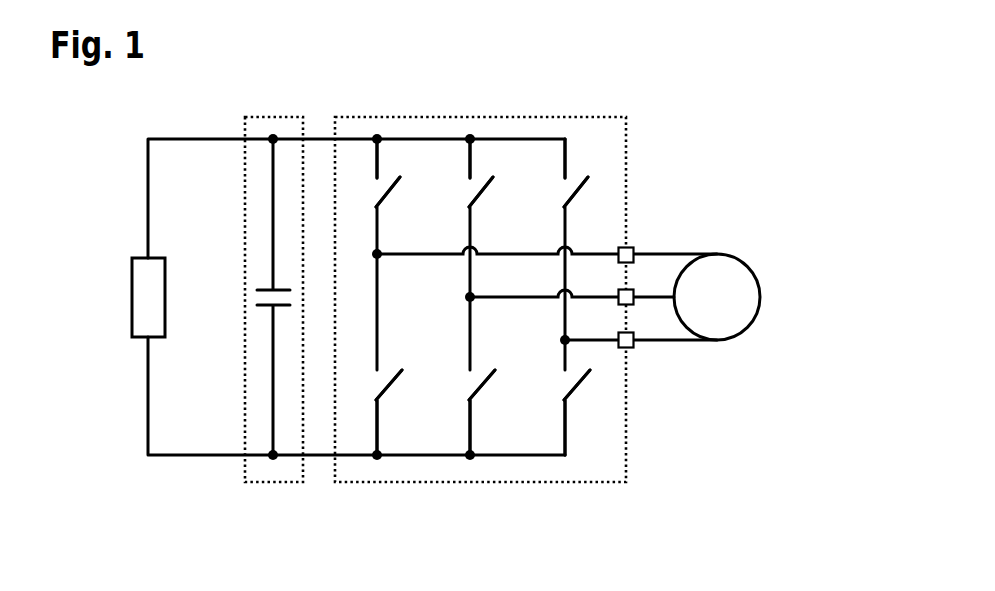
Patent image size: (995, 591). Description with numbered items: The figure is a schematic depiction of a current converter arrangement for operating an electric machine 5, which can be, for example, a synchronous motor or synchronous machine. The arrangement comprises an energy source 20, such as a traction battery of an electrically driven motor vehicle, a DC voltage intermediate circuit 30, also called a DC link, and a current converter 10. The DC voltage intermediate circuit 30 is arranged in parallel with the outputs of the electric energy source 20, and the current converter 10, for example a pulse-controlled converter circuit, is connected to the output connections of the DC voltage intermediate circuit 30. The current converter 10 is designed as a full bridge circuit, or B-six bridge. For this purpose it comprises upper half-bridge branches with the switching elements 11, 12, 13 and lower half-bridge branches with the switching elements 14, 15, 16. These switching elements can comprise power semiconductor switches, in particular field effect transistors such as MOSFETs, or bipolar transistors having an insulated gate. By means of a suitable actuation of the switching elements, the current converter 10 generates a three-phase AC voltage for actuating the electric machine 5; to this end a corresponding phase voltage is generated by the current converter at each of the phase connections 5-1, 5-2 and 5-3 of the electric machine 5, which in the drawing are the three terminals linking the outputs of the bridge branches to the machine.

The electric machine 5 is at (761, 297).
The phase connection 5-1 is at (634, 249).
The phase connection 5-2 is at (634, 303).
The phase connection 5-3 is at (634, 346).
The current converter 10 is at (363, 483).
The switching element 11 is at (391, 178).
The switching element 12 is at (486, 178).
The switching element 13 is at (580, 178).
The switching element 14 is at (389, 387).
The switching element 15 is at (482, 387).
The switching element 16 is at (578, 387).
The energy source 20 is at (132, 297).
The DC voltage intermediate circuit 30 is at (270, 483).